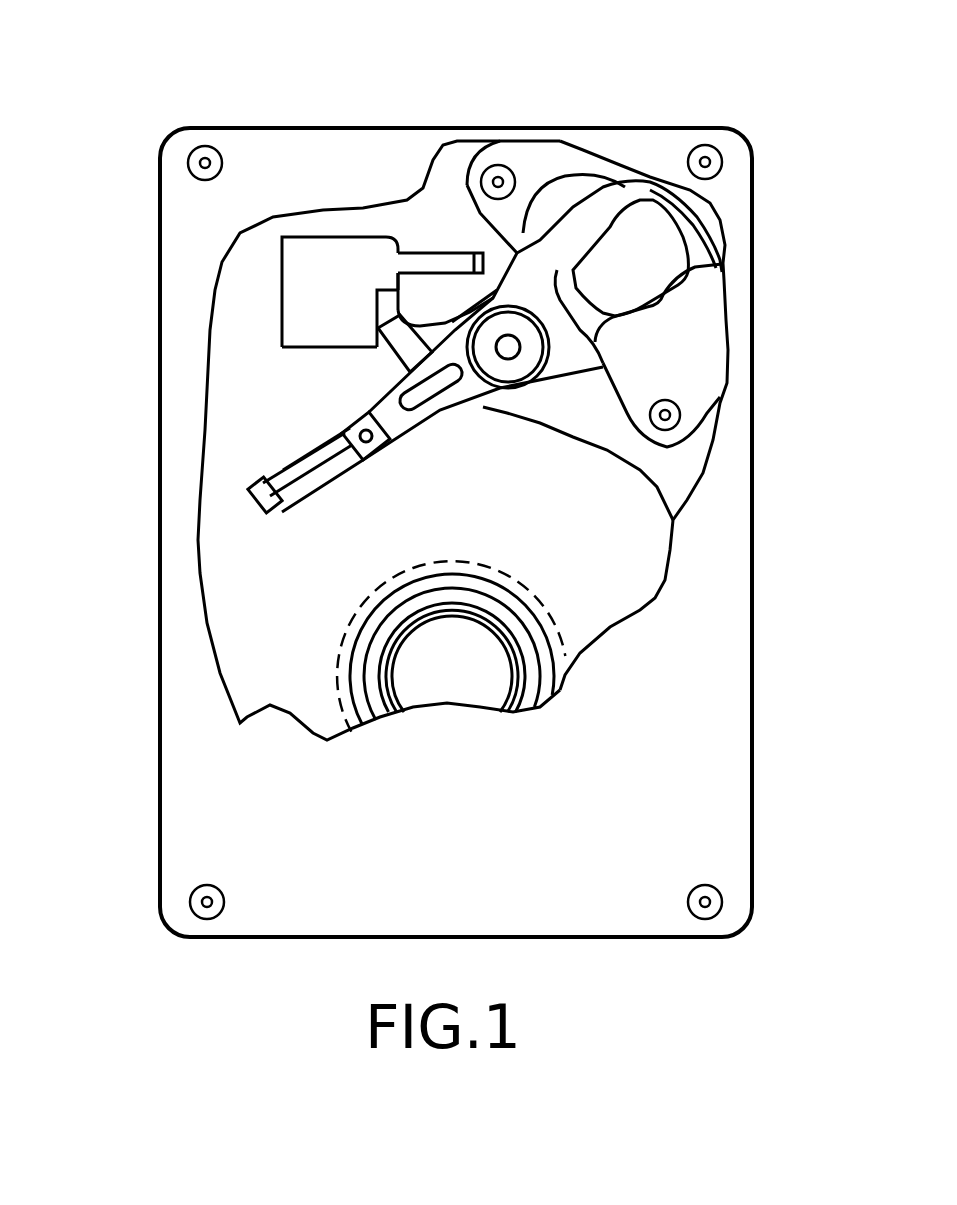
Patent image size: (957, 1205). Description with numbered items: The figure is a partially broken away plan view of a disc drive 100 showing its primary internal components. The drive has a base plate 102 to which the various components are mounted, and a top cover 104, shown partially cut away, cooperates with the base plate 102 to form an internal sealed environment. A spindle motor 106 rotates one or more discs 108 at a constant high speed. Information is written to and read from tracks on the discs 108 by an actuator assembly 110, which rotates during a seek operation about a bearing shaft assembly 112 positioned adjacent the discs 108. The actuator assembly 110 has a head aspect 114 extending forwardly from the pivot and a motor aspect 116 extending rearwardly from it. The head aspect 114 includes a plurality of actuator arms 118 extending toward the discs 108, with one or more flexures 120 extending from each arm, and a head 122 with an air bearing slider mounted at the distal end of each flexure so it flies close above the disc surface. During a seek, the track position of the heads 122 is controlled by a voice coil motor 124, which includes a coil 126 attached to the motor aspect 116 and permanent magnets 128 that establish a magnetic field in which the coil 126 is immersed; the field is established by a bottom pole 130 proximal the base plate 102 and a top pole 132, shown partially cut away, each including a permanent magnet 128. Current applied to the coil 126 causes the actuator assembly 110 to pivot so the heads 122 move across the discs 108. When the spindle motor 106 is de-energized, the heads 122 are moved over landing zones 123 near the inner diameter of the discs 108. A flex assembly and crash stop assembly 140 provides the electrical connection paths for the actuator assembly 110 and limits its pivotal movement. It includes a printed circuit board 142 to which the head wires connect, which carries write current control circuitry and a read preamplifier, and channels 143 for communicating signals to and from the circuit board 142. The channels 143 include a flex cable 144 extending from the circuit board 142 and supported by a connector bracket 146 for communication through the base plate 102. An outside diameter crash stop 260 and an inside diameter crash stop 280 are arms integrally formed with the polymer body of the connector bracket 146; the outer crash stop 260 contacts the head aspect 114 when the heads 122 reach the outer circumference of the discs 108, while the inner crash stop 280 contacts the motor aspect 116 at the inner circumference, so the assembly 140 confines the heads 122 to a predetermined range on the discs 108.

The disc drive 100 is at (195, 76).
The base plate 102 is at (232, 472).
The top cover 104 is at (210, 777).
The spindle motor 106 is at (453, 680).
The discs 108 is at (622, 590).
The actuator assembly 110 is at (493, 428).
The bearing shaft assembly 112 is at (533, 363).
The head aspect 114 is at (400, 423).
The motor aspect 116 is at (560, 330).
The actuator arms 118 is at (440, 410).
The flexures 120 is at (343, 453).
The head 122 is at (250, 513).
The landing zones 123 is at (337, 668).
The voice coil motor 124 is at (520, 105).
The coil 126 is at (697, 257).
The permanent magnets 128 is at (560, 207).
The bottom pole 130 is at (567, 187).
The top pole 132 is at (697, 337).
The flex assembly and crash stop assembly 140 is at (331, 292).
The printed circuit board 142 is at (470, 310).
The channels 143 is at (390, 270).
The flex cable 144 is at (383, 300).
The connector bracket 146 is at (290, 327).
The outside diameter crash stop 260 is at (387, 350).
The inside diameter crash stop 280 is at (423, 262).